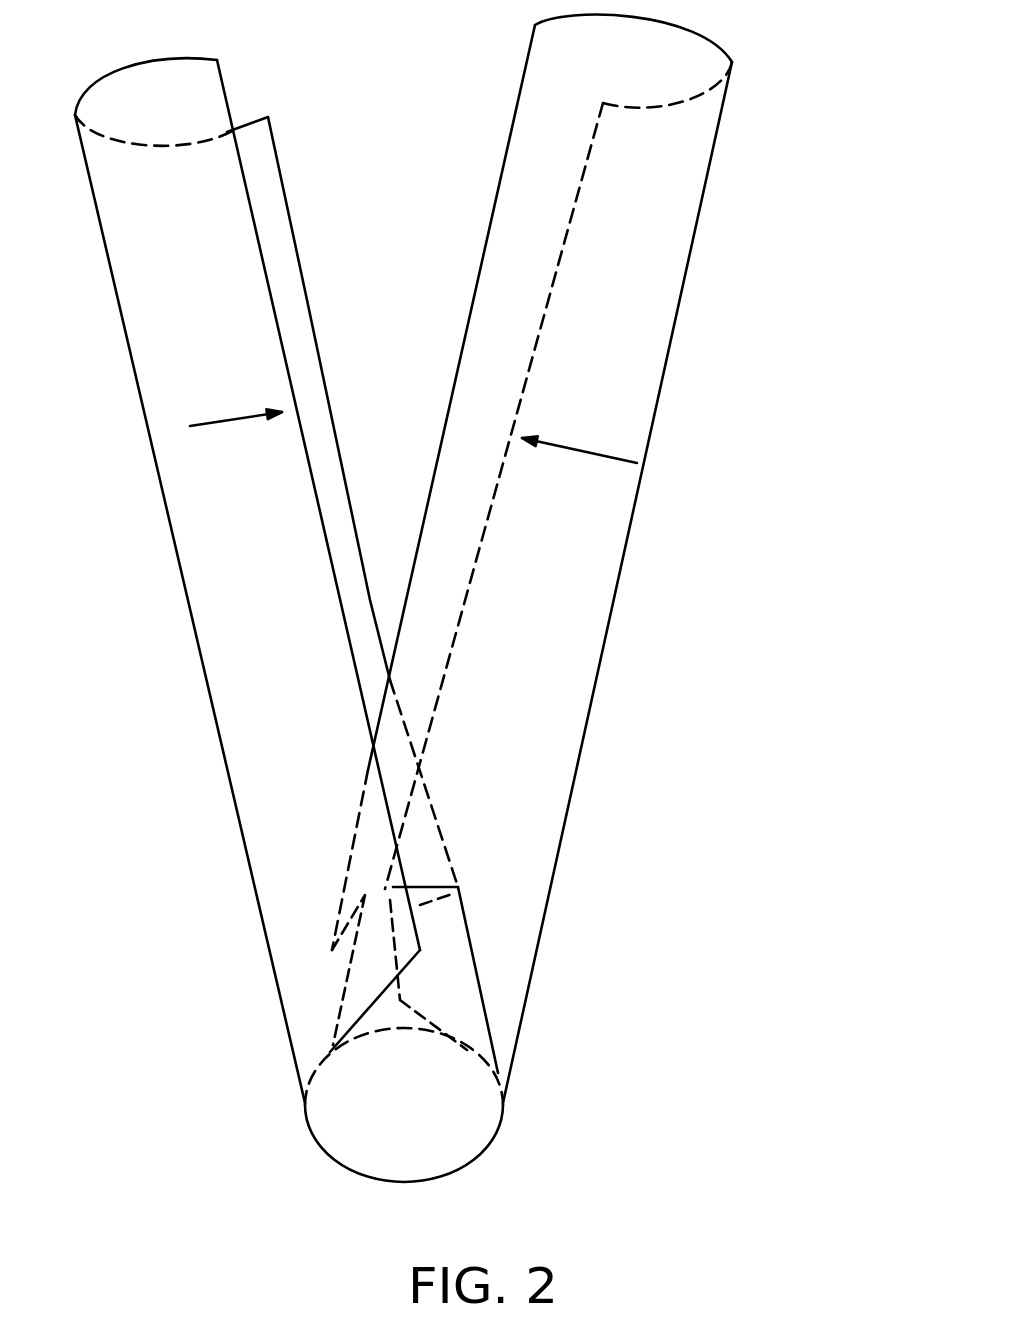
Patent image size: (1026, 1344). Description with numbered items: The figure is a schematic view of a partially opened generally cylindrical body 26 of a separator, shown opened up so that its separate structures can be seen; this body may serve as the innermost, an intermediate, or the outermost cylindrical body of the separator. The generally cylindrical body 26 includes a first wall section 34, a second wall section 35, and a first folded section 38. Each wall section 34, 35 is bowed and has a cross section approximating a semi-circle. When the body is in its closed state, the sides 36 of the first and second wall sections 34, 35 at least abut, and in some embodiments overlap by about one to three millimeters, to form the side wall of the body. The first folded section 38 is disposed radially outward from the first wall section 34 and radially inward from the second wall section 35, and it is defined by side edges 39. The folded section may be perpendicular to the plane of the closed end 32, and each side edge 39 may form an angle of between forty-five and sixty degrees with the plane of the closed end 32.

The generally cylindrical body 26 is at (806, 80).
The closed end 32 is at (425, 1117).
The first wall section 34 is at (618, 297).
The second wall section 35 is at (178, 316).
The sides 36 is at (220, 78).
The first folded section 38 is at (450, 975).
The side edge 39 is at (470, 925).